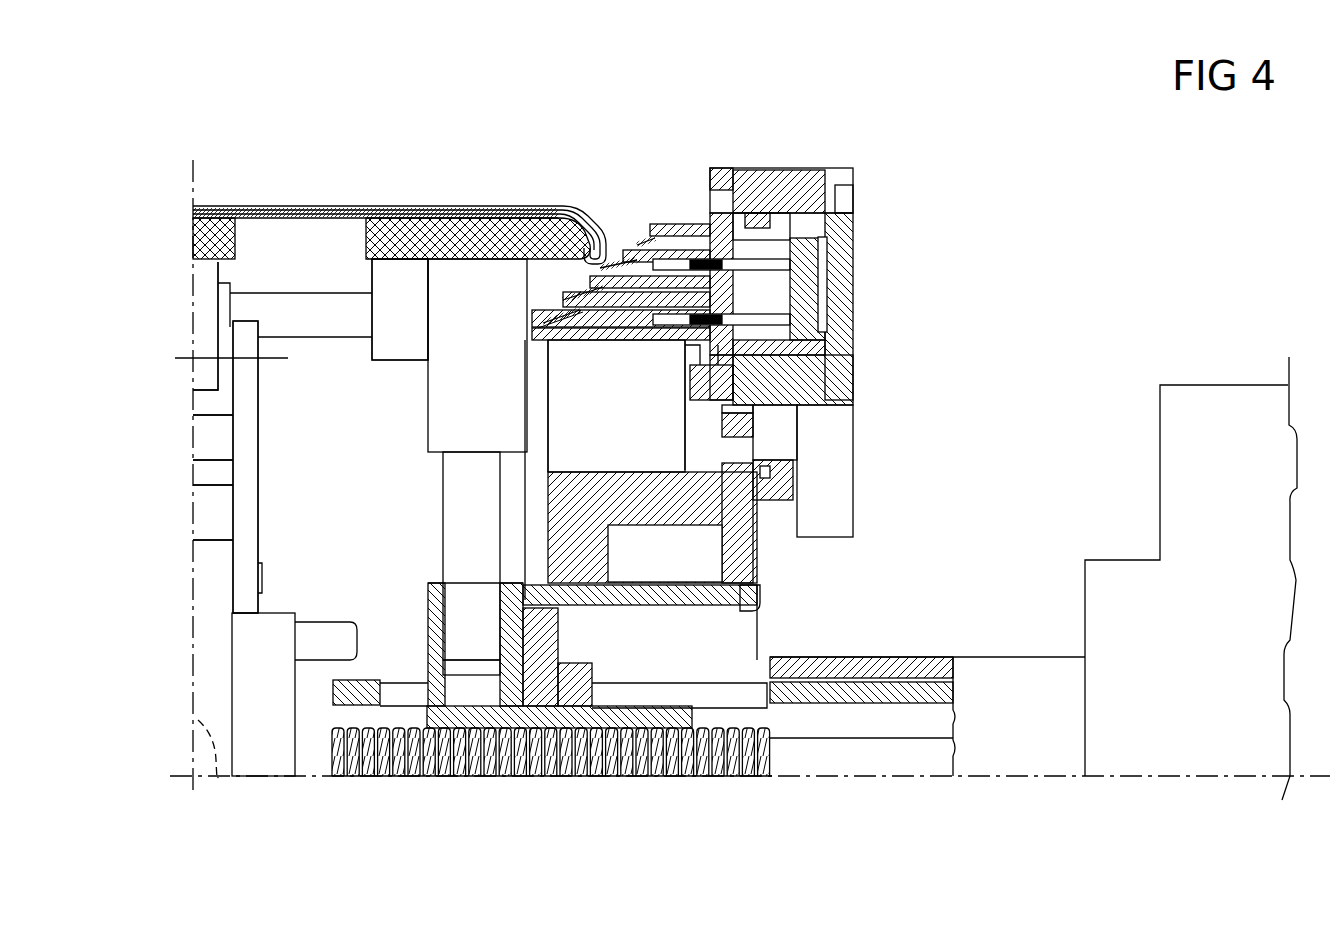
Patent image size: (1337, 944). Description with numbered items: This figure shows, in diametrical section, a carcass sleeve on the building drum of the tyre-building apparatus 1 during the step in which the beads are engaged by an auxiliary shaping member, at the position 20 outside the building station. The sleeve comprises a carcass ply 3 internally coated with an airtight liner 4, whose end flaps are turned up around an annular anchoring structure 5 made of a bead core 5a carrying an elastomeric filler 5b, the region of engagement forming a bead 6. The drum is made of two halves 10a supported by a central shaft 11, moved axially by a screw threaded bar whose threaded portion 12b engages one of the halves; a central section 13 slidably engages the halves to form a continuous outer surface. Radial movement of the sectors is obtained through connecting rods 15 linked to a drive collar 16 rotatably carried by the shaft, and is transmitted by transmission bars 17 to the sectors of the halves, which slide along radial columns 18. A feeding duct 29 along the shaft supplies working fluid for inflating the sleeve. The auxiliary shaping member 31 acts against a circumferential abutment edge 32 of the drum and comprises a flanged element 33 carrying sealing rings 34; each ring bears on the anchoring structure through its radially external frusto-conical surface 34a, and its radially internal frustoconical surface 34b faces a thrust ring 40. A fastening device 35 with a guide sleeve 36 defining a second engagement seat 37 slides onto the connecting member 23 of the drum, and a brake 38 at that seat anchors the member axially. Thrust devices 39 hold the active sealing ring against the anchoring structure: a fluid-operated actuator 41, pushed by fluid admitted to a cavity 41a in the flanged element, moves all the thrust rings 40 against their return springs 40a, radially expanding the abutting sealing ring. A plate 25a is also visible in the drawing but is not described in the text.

The apparatus 1 is at (1045, 203).
The carcass ply 3 is at (328, 206).
The liner 4 is at (267, 206).
The annular anchoring structure 5 is at (600, 215).
The bead core 5a is at (610, 215).
The elastomeric filler 5b is at (583, 200).
The bead 6 is at (557, 195).
The half of the building drum 10a is at (420, 218).
The central shaft 11 is at (887, 657).
The threaded portion 12b is at (485, 787).
The central section 13 is at (217, 215).
The connecting rod 15 is at (243, 443).
The drive collar 16 is at (217, 592).
The transmission bar 17 is at (323, 315).
The column 18 is at (460, 530).
The position 20 is at (1220, 352).
The connecting member 23 is at (690, 600).
The support plate 25a is at (580, 590).
The feeding duct 29 is at (222, 780).
The auxiliary shaping member 31 is at (829, 170).
The circumferential abutment edge 32 is at (622, 245).
The flanged element 33 is at (797, 397).
The sealing ring 34 is at (545, 315).
The radially external frusto-conical surface 34a is at (553, 318).
The radially internal frustoconical surface 34b is at (565, 345).
The fastening device 35 is at (768, 525).
The guide sleeve 36 is at (740, 562).
The second engagement seat 37 is at (753, 613).
The brake 38 is at (665, 560).
The thrust devices 39 is at (783, 190).
The thrust ring 40 is at (688, 225).
The return spring 40a is at (767, 262).
The fluid-operated actuator 41 is at (807, 283).
The cavity 41a is at (823, 315).